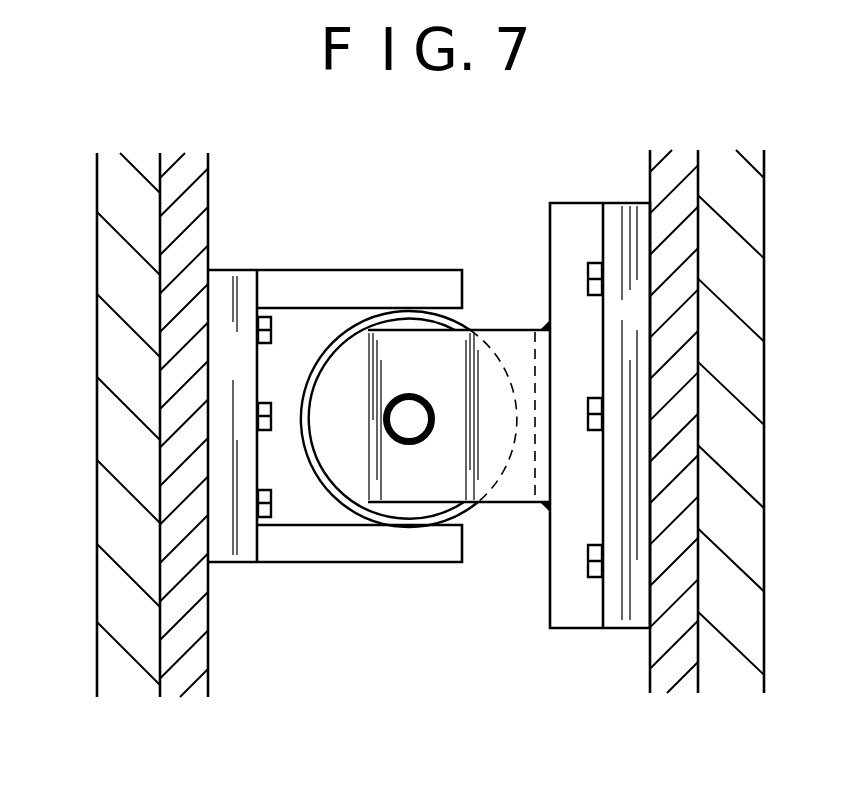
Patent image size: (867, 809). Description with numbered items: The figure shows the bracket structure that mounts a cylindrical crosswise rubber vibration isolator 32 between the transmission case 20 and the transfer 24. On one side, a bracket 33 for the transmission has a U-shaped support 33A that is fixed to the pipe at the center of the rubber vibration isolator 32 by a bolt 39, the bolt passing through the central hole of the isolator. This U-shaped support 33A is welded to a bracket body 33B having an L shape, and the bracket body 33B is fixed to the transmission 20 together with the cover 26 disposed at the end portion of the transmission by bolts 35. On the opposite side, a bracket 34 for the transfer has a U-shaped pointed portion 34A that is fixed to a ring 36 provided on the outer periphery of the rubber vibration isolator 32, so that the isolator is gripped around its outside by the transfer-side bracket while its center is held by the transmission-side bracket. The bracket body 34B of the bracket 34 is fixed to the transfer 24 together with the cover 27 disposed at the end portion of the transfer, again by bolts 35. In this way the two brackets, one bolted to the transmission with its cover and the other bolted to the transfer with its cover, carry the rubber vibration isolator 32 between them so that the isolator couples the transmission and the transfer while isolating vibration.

The transmission case 20 is at (740, 610).
The transfer 24 is at (118, 542).
The cover 26 is at (678, 652).
The cover 27 is at (190, 682).
The rubber vibration isolator 32 is at (405, 442).
The bracket for the transmission 33 is at (574, 460).
The U-shaped support 33A is at (497, 505).
The bracket body 33B is at (598, 454).
The bracket for the transfer 34 is at (335, 331).
The U-shaped pointed portion 34A is at (410, 271).
The bracket body 34B is at (240, 278).
The bolts 35 is at (270, 335).
The ring 36 is at (462, 325).
The bolt 39 is at (409, 422).